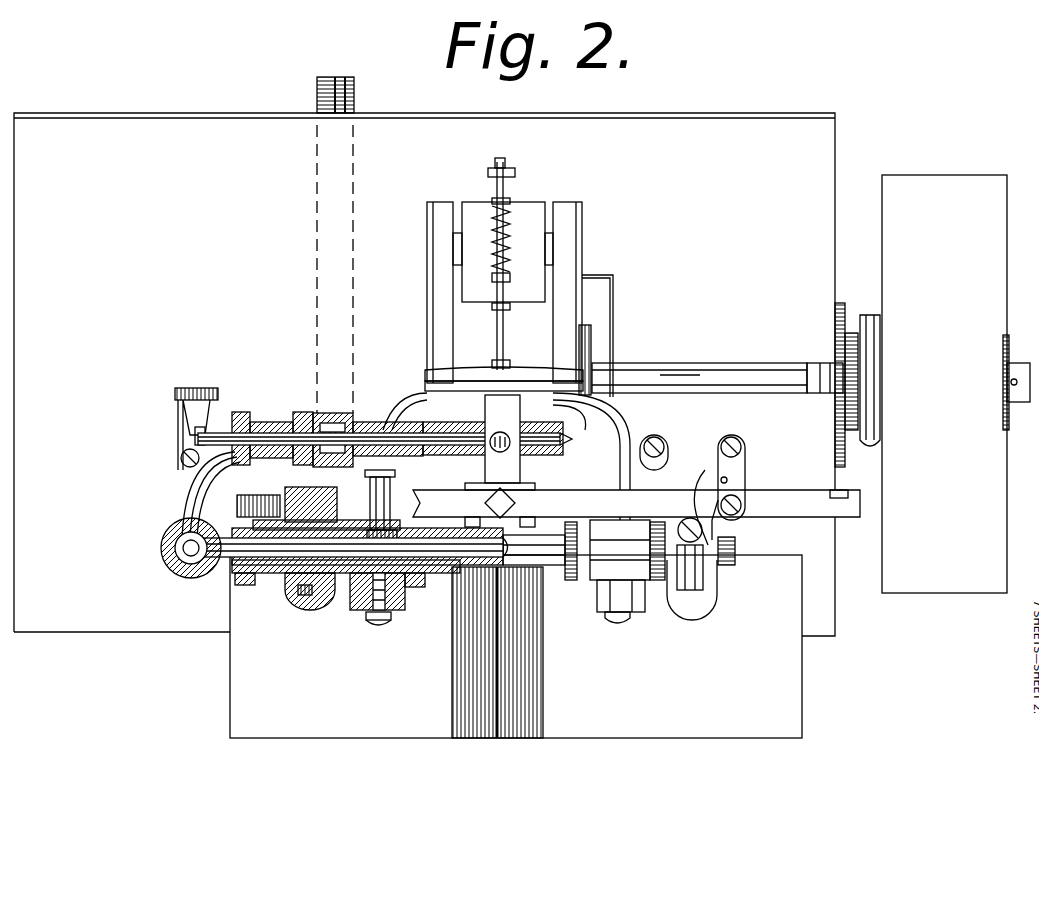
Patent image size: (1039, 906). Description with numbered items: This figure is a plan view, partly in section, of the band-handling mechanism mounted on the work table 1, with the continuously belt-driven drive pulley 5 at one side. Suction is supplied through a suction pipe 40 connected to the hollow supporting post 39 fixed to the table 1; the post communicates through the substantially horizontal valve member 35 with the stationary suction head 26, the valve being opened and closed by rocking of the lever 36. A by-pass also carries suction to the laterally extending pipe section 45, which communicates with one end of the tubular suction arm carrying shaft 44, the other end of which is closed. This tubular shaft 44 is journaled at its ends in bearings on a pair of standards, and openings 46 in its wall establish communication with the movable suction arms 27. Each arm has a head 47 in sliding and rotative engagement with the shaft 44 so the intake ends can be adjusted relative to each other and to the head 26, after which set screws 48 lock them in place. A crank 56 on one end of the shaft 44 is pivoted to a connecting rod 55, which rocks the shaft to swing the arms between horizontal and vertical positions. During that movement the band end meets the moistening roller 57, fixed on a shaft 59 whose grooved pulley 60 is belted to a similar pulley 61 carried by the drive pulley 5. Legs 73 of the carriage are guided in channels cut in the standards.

The work table 1 is at (815, 150).
The drive pulley 5 is at (905, 192).
The suction pipe 40 is at (352, 110).
The moistening roller 57 is at (592, 330).
The shaft 59 is at (700, 372).
The gear 60 is at (866, 310).
The pulley 61 is at (872, 455).
The movable suction arms 27 is at (400, 410).
The lever 36 is at (197, 410).
The hollow supporting post 39 is at (336, 410).
The horizontal valve member 35 is at (360, 425).
The stationary suction head 26 is at (525, 470).
The crank 56 is at (245, 490).
The connecting rod 55 is at (262, 510).
The set screws 48 is at (605, 618).
The pipe section 45 is at (225, 550).
The legs 73 is at (297, 558).
The openings 46 is at (352, 560).
The head 47 is at (405, 610).
The tubular suction arm carrying shaft 44 is at (430, 570).